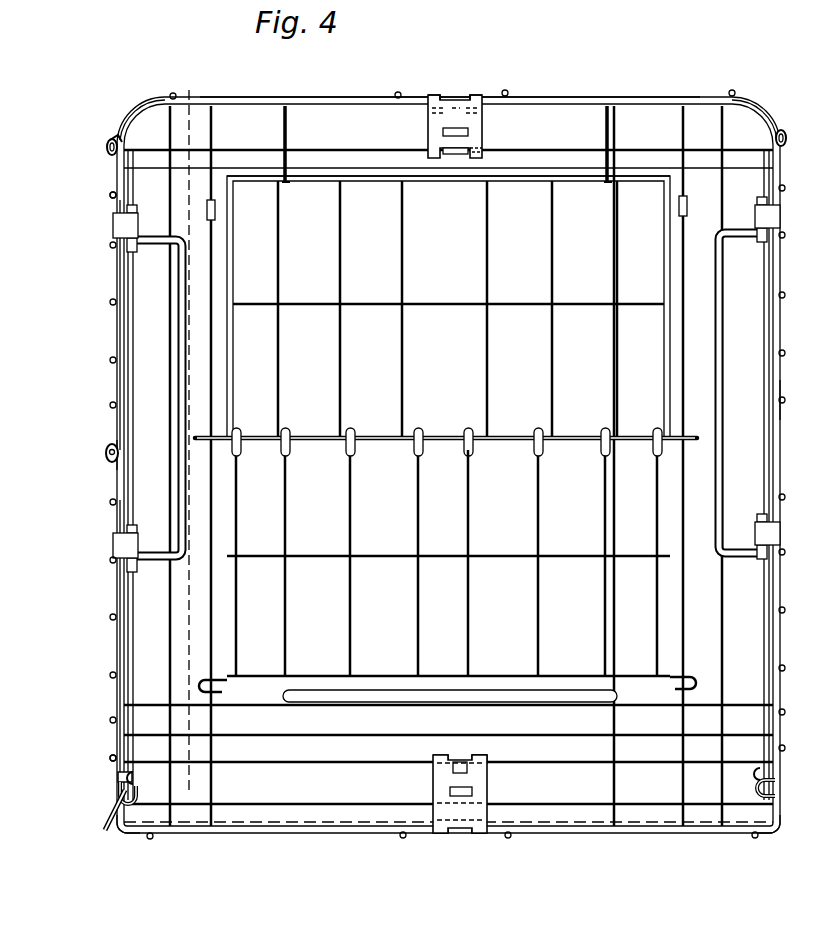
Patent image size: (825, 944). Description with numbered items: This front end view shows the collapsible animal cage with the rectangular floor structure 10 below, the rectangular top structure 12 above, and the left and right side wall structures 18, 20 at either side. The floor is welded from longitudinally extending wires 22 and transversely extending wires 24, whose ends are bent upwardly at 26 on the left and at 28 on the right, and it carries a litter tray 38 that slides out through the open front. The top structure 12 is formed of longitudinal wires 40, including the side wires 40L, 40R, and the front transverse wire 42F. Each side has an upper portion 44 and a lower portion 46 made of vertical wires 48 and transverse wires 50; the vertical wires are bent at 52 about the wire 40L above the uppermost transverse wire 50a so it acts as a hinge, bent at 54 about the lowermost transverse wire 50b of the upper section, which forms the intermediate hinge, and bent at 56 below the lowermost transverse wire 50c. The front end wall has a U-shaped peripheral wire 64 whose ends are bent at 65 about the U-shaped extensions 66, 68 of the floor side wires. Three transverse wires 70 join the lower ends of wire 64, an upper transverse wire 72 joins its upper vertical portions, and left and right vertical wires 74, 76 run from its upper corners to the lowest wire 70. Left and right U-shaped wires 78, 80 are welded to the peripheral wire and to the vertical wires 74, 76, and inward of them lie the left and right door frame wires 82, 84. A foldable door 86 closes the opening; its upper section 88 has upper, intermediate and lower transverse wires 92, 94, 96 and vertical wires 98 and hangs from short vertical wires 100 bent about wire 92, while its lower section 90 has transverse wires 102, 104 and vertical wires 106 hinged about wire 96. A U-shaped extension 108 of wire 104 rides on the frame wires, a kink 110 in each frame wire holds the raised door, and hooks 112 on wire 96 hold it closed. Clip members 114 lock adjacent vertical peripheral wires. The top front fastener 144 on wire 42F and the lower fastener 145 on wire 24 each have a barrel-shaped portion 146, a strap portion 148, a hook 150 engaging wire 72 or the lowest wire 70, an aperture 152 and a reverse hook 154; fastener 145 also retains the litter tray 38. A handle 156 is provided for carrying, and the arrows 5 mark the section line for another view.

The section line 5- 5 is at (232, 104).
The floor structure 10 is at (330, 853).
The top structure 12 is at (548, 75).
The left hand rectangular side wall structure 18 is at (75, 453).
The right hand rectangular side wall structure 20 is at (789, 398).
The longitudinally extending wires 22 is at (150, 840).
The transversely extending wires 24 is at (262, 838).
The upwardly bent left hand ends 26 is at (115, 815).
The upwardly bent right hand ends 28 is at (790, 812).
The litter tray 38 is at (272, 808).
The longitudinally extending wires 40 is at (396, 95).
The left longitudinal wire 40L is at (107, 143).
The right longitudinal wire 40R is at (784, 130).
The front transversely extending wire 42F is at (298, 100).
The upper portion of side 44 is at (105, 322).
The lower portion of side 46 is at (105, 628).
The vertically extending wires 48 is at (117, 180).
The transversely extending wires 50 is at (110, 360).
The uppermost transverse wire 50a is at (110, 197).
The lowermost transverse wire of upper section 50b is at (108, 462).
The lowermost transverse wire 50c is at (112, 757).
The bend 52 is at (112, 138).
The bend 54 is at (107, 448).
The bend 56 is at (115, 776).
The U-shaped peripheral wire 64 is at (740, 100).
The bent ends 65 is at (133, 772).
The U-shaped extension 66 is at (142, 795).
The U-shaped extension 68 is at (760, 793).
The transversely extending wires 70 is at (305, 705).
The upper transverse wire 72 is at (628, 150).
The left hand vertical wire 74 is at (163, 137).
The right hand vertical wire 76 is at (730, 182).
The left U-shaped wire 78 is at (155, 246).
The right U-shaped wire 80 is at (738, 240).
The left hand door frame wire 82 is at (216, 135).
The right hand door frame wire 84 is at (686, 160).
The foldable door 86 is at (308, 507).
The upper section 88 is at (448, 306).
The lower section 90 is at (446, 552).
The upper transverse wire 92 is at (352, 178).
The intermediate transverse wire 94 is at (417, 305).
The lower transverse wire 96 is at (430, 435).
The vertically extending wires 98 is at (486, 355).
The short vertical wires 100 is at (290, 136).
The upper transverse wire 102 is at (362, 555).
The lower transverse wire 104 is at (362, 675).
The vertically extending wires 106 is at (472, 632).
The U-shaped extension 108 is at (226, 688).
The kink 110 is at (216, 213).
The U-shaped extensions 112 is at (240, 436).
The clip members 114 is at (113, 228).
The top front clip 144 is at (455, 90).
The third fastener 145 is at (500, 785).
The barrel-shaped portion 146 is at (437, 95).
The intermediate strap portion 148 is at (430, 120).
The hook portion 150 is at (480, 160).
The transverse aperture 152 is at (470, 132).
The reversely extending hook 154 is at (460, 160).
The handle 156 is at (95, 815).